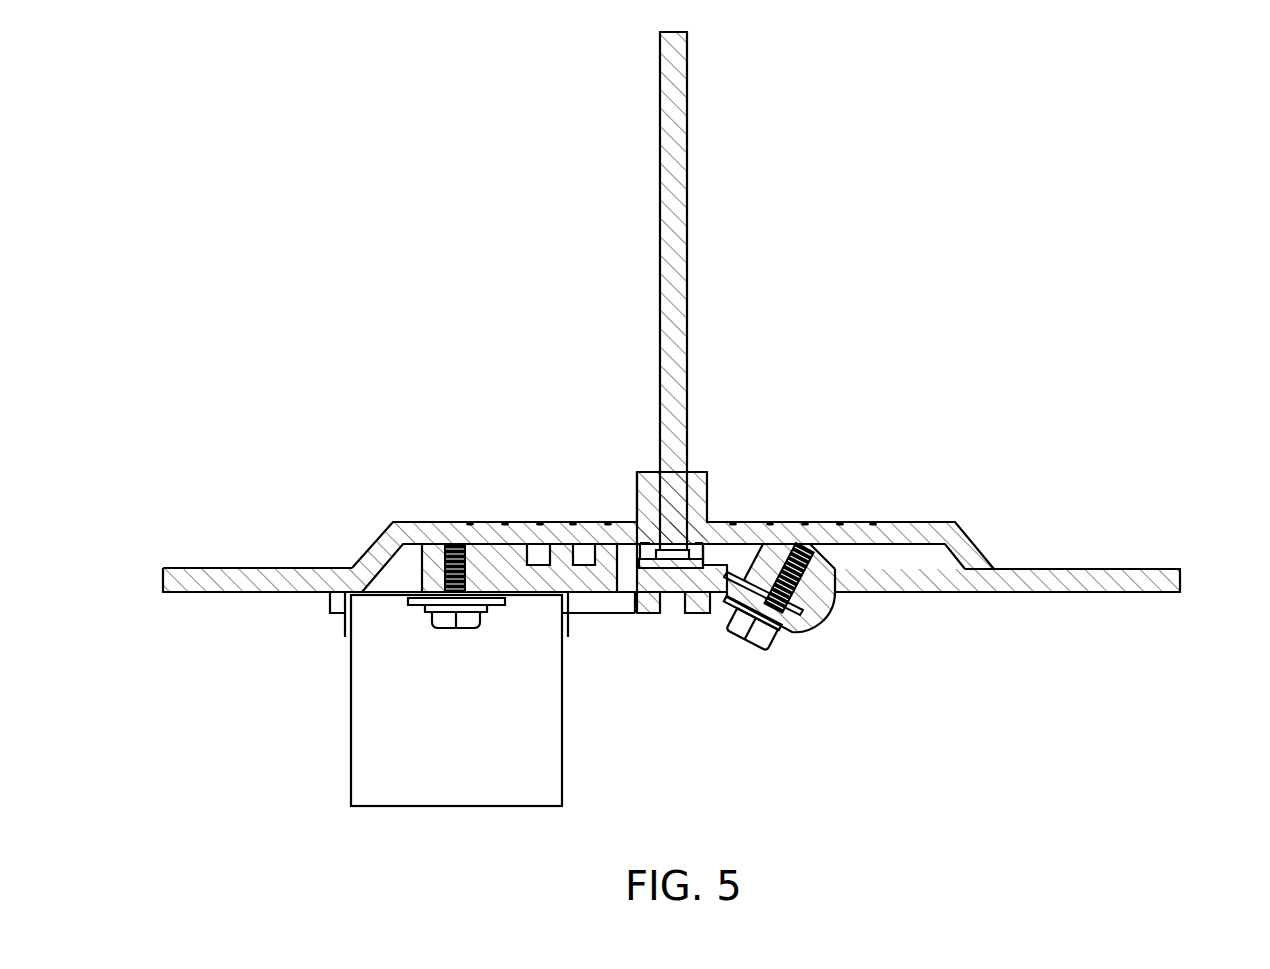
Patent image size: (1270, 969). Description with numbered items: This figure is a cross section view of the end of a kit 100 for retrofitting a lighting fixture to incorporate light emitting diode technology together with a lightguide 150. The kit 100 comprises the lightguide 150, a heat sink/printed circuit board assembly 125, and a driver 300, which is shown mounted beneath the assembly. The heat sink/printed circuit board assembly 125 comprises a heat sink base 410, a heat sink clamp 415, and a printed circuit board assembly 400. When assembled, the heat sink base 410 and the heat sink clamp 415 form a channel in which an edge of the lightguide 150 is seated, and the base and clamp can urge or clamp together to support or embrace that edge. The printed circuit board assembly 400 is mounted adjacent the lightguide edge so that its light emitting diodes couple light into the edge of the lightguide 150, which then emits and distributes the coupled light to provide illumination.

The kit 100 is at (378, 90).
The heat sink/printed circuit board assembly 125 is at (1042, 466).
The lightguide 150 is at (688, 88).
The driver 300 is at (562, 712).
The printed circuit board assembly 400 is at (647, 554).
The heat sink base 410 is at (905, 596).
The heat sink clamp 415 is at (893, 522).